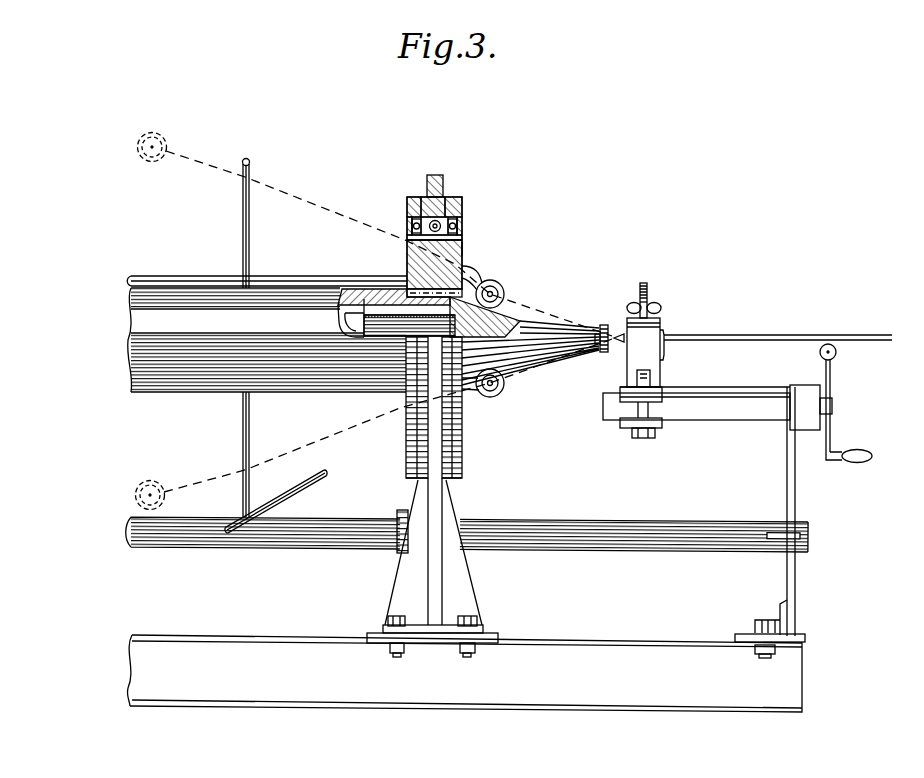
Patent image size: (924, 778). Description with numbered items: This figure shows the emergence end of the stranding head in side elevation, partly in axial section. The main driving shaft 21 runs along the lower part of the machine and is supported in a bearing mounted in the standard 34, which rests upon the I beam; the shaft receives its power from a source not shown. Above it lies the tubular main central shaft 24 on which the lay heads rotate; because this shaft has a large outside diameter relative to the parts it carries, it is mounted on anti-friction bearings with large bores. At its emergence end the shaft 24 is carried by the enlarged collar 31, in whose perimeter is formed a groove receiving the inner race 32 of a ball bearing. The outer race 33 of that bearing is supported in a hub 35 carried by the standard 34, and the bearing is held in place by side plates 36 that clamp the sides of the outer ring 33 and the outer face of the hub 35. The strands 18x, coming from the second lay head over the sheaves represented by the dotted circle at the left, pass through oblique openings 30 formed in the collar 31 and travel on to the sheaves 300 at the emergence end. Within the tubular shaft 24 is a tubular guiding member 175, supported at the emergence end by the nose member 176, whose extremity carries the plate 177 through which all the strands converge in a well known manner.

The strands 18x is at (277, 190).
The main driving shaft 21 is at (170, 546).
The main central shaft 24 is at (267, 340).
The oblique openings 30 is at (462, 272).
The enlarged collar 31 is at (462, 250).
The inner race 32 is at (462, 233).
The outer race 33 is at (462, 216).
The standard 34 is at (428, 576).
The hub 35 is at (437, 197).
The side plates 36 is at (412, 197).
The tubular guiding member 175 is at (357, 318).
The nose member 176 is at (520, 352).
The plate 177 is at (603, 323).
The sheaves 300 is at (503, 293).